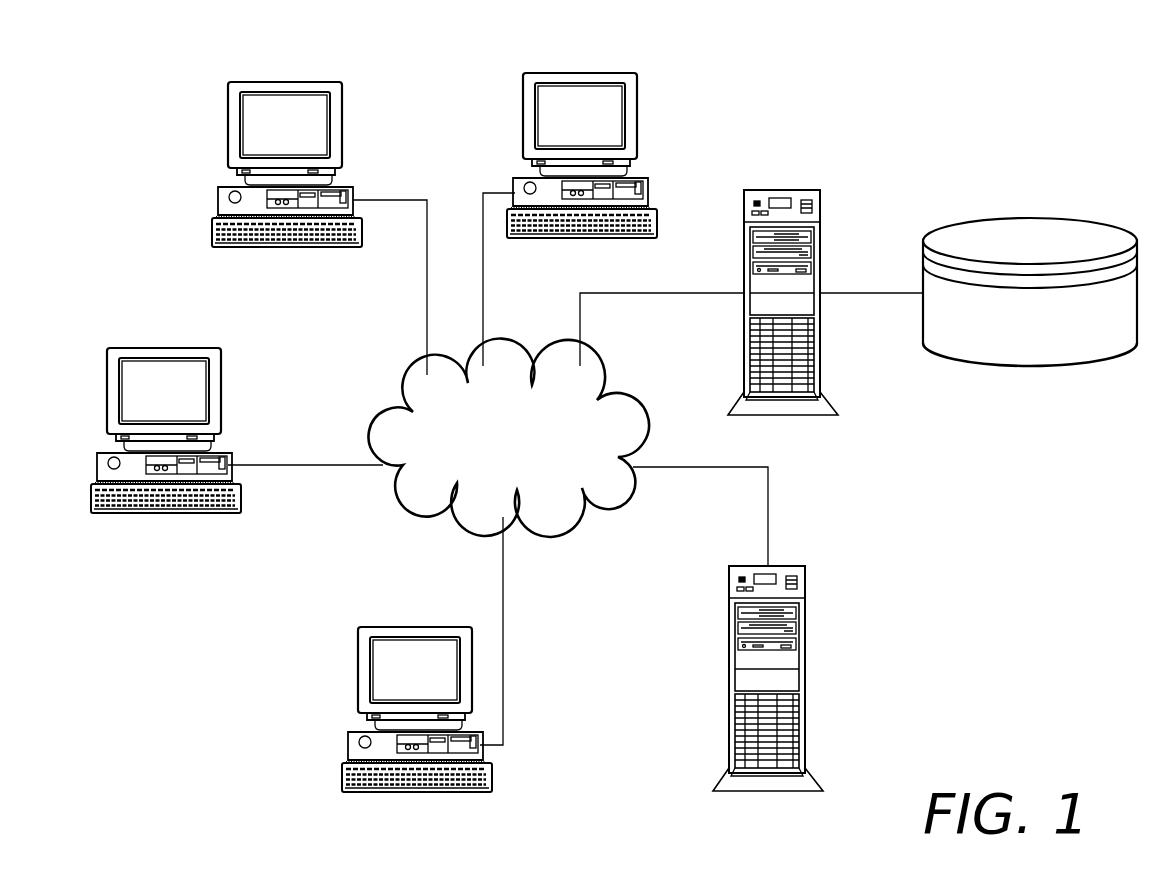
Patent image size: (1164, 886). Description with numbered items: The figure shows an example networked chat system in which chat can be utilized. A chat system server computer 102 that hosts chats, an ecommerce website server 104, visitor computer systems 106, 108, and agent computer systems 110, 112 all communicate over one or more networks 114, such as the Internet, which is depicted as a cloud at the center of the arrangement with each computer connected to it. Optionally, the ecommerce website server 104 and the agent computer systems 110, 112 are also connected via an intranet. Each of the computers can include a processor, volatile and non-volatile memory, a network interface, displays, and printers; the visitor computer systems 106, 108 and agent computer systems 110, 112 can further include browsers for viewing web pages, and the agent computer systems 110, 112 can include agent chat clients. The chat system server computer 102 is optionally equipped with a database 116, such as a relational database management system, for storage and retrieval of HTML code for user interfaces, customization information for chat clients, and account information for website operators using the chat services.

The chat system server computer 102 is at (790, 190).
The ecommerce website server 104 is at (780, 566).
The visitor computer system 106 is at (430, 627).
The visitor computer system 108 is at (175, 348).
The agent computer system 110 is at (290, 82).
The agent computer system 112 is at (600, 73).
The network 114 is at (412, 410).
The database 116 is at (1028, 362).